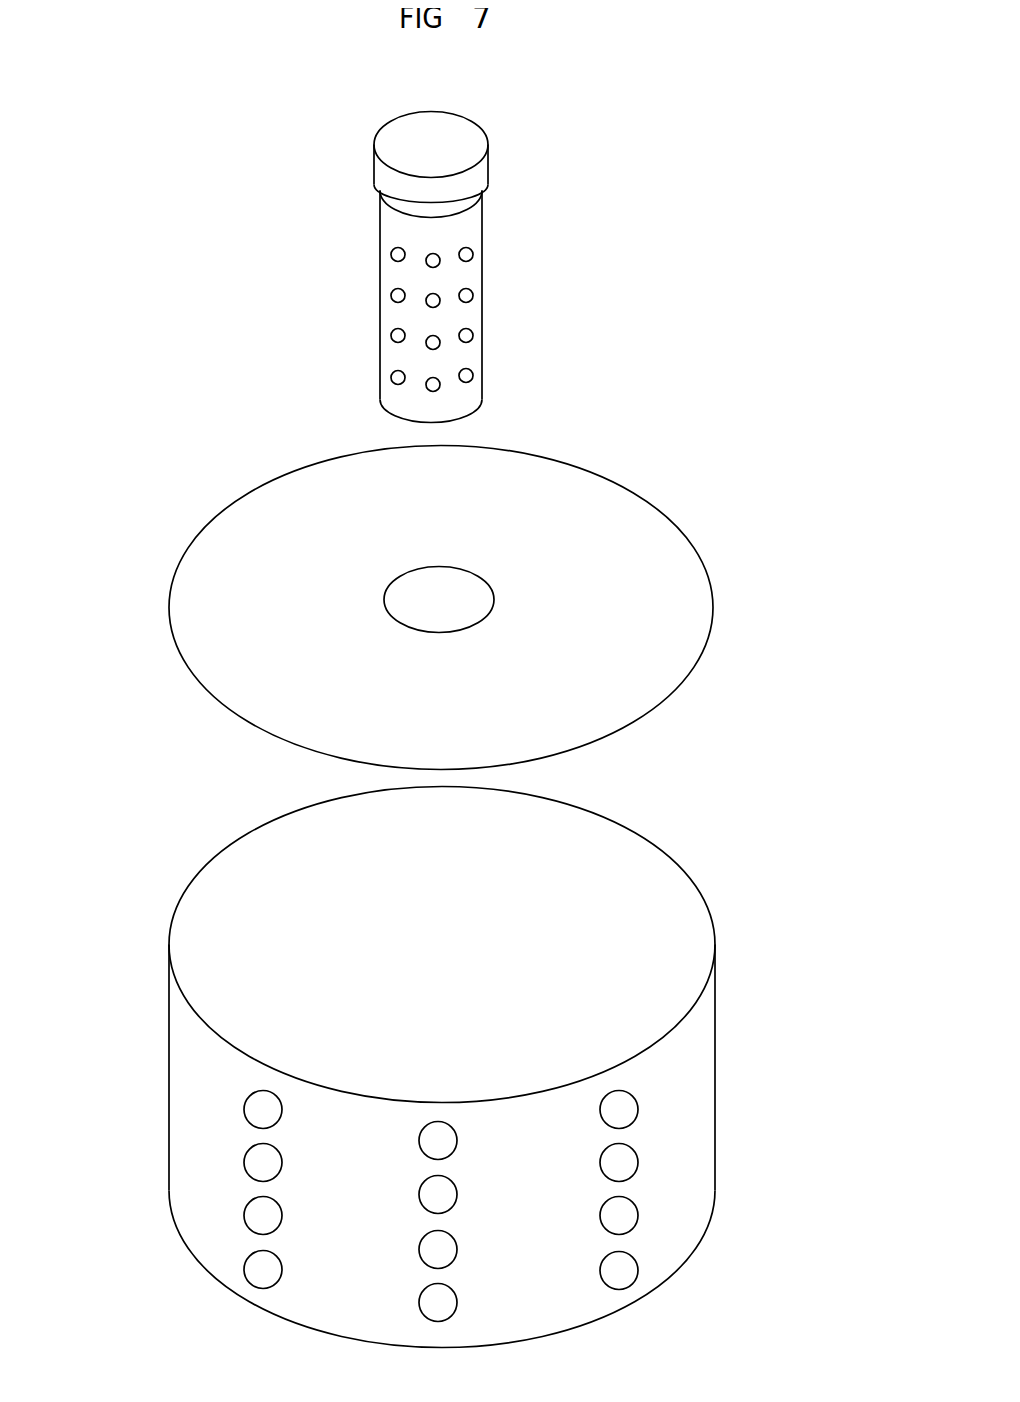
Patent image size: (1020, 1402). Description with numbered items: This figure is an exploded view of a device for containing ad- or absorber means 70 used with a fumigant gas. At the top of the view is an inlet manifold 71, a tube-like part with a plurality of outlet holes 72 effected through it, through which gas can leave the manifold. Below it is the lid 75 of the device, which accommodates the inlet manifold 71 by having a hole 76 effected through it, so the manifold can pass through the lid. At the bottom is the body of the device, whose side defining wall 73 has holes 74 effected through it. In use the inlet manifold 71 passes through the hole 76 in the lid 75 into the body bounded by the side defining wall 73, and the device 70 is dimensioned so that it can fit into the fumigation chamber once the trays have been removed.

The device for containing ad- or absorber means 70 is at (215, 755).
The inlet manifold 71 is at (468, 230).
The outlet holes 72 is at (470, 293).
The side defining wall 73 is at (702, 1172).
The holes 74 is at (620, 1213).
The lid 75 is at (645, 637).
The hole 76 is at (433, 597).